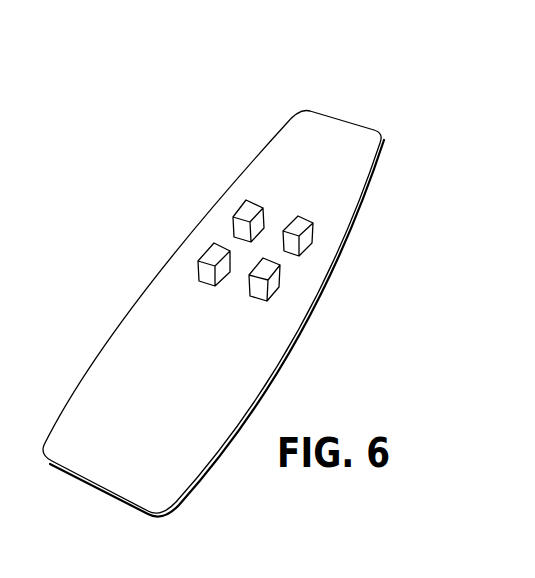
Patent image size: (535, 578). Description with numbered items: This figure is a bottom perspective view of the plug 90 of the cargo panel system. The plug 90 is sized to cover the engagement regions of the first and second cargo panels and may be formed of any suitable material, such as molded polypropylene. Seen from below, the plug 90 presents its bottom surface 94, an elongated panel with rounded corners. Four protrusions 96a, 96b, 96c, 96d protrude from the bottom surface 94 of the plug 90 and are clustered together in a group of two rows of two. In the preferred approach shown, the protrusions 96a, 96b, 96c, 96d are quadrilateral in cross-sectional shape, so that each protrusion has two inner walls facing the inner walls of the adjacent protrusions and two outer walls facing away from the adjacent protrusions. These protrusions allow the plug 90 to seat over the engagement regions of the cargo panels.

The plug 90 is at (150, 138).
The bottom surface 94 is at (330, 138).
The protrusion 96a is at (246, 201).
The protrusion 96b is at (298, 222).
The protrusion 96c is at (267, 261).
The protrusion 96d is at (212, 250).